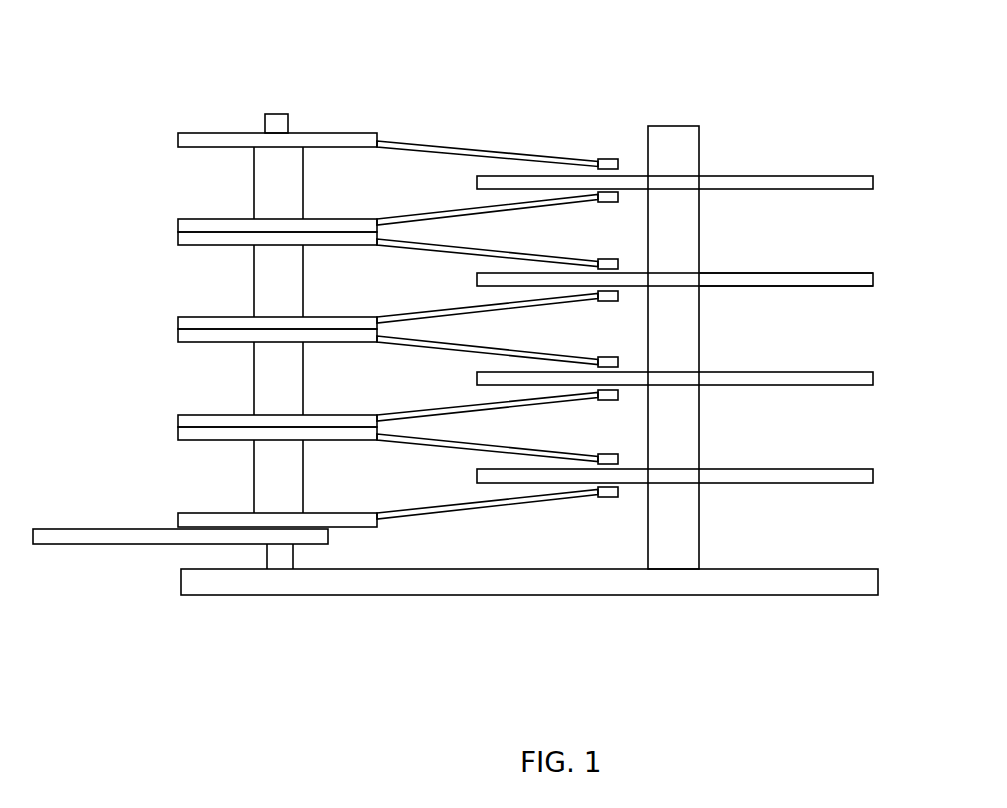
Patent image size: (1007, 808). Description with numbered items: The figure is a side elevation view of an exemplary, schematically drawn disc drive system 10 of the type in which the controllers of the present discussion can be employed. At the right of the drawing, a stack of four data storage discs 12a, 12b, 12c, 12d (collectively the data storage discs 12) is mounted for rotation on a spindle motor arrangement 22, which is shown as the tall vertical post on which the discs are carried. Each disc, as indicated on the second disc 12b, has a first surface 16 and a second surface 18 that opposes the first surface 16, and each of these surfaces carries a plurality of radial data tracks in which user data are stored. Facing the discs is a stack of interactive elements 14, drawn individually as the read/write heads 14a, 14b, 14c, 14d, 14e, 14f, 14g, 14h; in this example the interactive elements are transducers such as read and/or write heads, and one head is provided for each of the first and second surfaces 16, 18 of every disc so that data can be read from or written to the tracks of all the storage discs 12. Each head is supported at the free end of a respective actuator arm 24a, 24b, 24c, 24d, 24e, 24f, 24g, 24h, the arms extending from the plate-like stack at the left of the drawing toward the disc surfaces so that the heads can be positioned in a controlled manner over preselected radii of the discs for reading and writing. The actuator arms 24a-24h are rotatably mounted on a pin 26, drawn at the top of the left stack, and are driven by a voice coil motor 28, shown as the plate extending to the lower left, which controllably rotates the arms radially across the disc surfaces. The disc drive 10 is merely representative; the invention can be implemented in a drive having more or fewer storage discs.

The disc drive system 10 is at (458, 68).
The data storage discs 12 is at (708, 332).
The data storage disc 12a is at (873, 176).
The data storage disc 12b is at (873, 273).
The data storage disc 12c is at (873, 372).
The data storage disc 12d is at (873, 469).
The interactive elements 14 is at (487, 308).
The read/write head 14a is at (597, 164).
The read/write head 14b is at (597, 197).
The read/write head 14c is at (597, 263).
The read/write head 14d is at (597, 292).
The read/write head 14e is at (597, 360).
The read/write head 14f is at (597, 390).
The read/write head 14g is at (597, 460).
The read/write head 14h is at (597, 490).
The first surface 16 is at (782, 273).
The second surface 18 is at (782, 287).
The spindle motor arrangement 22 is at (699, 127).
The actuator arm 24a is at (443, 147).
The actuator arm 24b is at (495, 210).
The actuator arm 24c is at (562, 257).
The actuator arm 24d is at (498, 313).
The actuator arm 24e is at (566, 352).
The actuator arm 24f is at (502, 410).
The actuator arm 24g is at (569, 451).
The actuator arm 24h is at (508, 509).
The pin 26 is at (277, 123).
The voice coil motor 28 is at (63, 530).